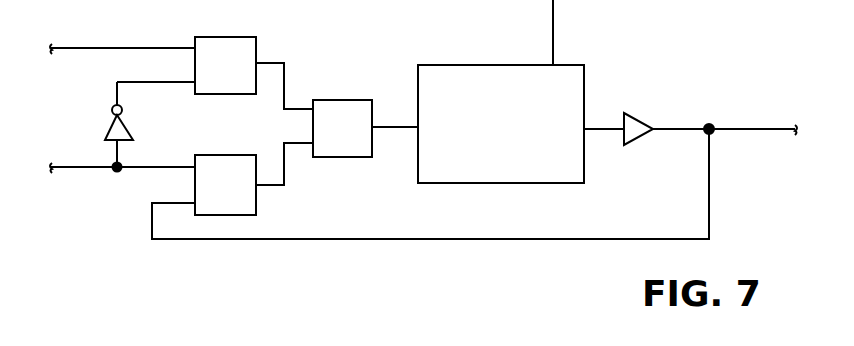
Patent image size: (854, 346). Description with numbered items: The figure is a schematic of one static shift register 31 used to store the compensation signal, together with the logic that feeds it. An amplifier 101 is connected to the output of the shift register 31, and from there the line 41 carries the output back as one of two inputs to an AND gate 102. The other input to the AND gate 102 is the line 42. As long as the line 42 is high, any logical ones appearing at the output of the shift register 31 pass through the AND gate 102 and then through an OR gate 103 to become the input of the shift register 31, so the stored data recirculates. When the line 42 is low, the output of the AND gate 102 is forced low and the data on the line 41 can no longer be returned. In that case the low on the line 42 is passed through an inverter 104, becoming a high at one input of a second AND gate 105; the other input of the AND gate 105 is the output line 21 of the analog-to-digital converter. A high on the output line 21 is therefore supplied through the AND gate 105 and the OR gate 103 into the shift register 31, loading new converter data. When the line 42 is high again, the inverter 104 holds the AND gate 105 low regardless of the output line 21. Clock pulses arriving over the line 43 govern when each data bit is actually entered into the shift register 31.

The output line 21 is at (67, 47).
The AND gate 105 is at (218, 37).
The inverter 104 is at (105, 132).
The line 42 is at (89, 169).
The AND gate 102 is at (253, 215).
The OR gate 103 is at (333, 100).
The shift register 31 is at (487, 186).
The line 43 is at (553, 38).
The amplifier 101 is at (631, 113).
The line 41 is at (560, 239).